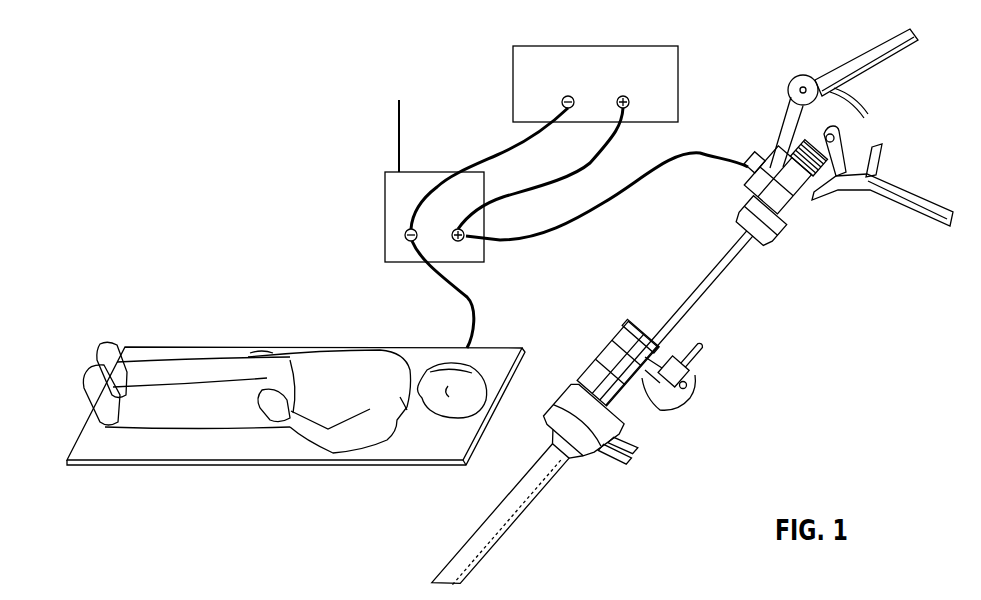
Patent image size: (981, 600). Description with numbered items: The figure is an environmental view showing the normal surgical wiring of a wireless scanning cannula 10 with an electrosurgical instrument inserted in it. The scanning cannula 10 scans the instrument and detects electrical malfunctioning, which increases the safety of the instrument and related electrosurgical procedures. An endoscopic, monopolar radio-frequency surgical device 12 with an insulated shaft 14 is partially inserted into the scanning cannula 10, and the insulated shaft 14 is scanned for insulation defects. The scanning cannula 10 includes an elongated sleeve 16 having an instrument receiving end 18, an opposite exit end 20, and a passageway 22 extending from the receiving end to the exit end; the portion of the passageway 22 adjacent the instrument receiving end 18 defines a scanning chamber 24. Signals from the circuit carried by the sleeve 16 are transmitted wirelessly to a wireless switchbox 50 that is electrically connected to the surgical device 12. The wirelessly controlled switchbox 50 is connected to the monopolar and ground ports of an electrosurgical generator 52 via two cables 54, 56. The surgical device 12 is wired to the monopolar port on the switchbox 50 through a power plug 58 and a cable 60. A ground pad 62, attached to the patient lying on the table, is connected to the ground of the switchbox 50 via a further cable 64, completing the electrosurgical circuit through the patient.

The scanning cannula 10 is at (650, 413).
The surgical device 12 is at (882, 200).
The insulated shaft 14 is at (707, 288).
The elongated sleeve 16 is at (583, 380).
The instrument receiving end 18 is at (648, 345).
The exit end 20 is at (430, 583).
The passageway 22 is at (548, 470).
The scanning chamber 24 is at (612, 345).
The wireless switchbox 50 is at (472, 255).
The electrosurgical generator 52 is at (665, 74).
The cable 54 is at (495, 153).
The cable 56 is at (547, 177).
The power plug 58 is at (749, 164).
The cable 60 is at (600, 200).
The ground pad 62 is at (400, 462).
The cable 64 is at (475, 305).